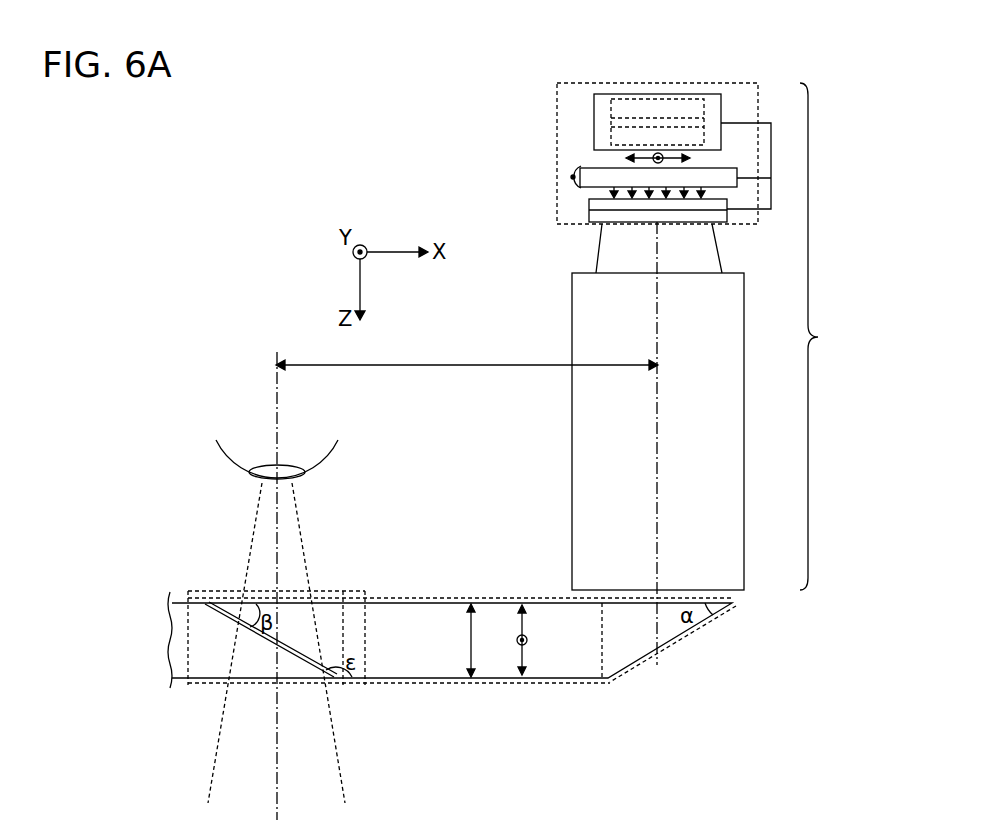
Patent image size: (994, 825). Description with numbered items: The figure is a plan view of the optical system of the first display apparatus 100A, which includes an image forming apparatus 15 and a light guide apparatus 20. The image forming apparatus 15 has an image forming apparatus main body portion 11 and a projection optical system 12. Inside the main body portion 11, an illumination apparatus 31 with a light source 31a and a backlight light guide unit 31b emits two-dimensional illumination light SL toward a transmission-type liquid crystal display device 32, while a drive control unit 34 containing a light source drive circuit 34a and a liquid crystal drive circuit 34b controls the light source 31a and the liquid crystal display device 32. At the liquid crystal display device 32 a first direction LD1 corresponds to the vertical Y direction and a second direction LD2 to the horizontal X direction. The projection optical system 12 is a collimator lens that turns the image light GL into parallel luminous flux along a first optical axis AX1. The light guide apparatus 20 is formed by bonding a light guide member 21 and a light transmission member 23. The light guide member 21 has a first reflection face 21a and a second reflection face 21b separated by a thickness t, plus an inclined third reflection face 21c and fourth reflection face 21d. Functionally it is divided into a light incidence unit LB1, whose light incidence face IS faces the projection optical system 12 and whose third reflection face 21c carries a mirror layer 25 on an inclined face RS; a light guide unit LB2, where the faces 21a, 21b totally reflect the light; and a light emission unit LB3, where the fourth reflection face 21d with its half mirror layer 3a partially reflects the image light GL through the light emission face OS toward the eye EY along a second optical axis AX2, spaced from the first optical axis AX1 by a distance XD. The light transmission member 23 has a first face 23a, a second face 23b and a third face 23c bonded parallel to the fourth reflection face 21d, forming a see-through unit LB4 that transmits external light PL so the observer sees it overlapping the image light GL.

The first display apparatus 100A is at (377, 153).
The image forming apparatus 15 is at (823, 336).
The image forming apparatus main body portion 11 is at (580, 83).
The drive control unit 34 is at (625, 94).
The light source drive circuit 34a is at (653, 112).
The liquid crystal drive circuit 34b is at (692, 97).
The first direction LD1 is at (660, 156).
The second direction LD2 is at (650, 154).
The illumination apparatus 31 is at (542, 160).
The light source 31a is at (563, 176).
The backlight light guide unit 31b is at (590, 167).
The liquid crystal display device 32 is at (589, 206).
The illumination light SL is at (704, 183).
The image light GL is at (716, 238).
The first optical axis AX1 is at (657, 262).
The projection optical system 12 is at (572, 418).
The distance XD is at (467, 353).
The light incidence face IS is at (628, 600).
The second optical axis AX2 is at (276, 400).
The eye EY is at (222, 450).
The external light PL is at (245, 526).
The light guide member 21 is at (572, 662).
The first reflection face 21a is at (432, 600).
The second reflection face 21b is at (535, 683).
The third reflection face 21c is at (630, 662).
The fourth reflection face 21d is at (245, 637).
The mirror layer 25 is at (668, 647).
The inclined face RS is at (693, 637).
The light incidence unit LB1 is at (693, 648).
The light guide unit LB2 is at (403, 685).
The light emission unit LB3 is at (343, 630).
The see-through unit LB4 is at (332, 664).
The thickness t is at (474, 640).
The light guide apparatus 20 is at (472, 703).
The light transmission member 23 is at (207, 658).
The first face 23a is at (201, 603).
The second face 23b is at (255, 685).
The third face 23c is at (300, 650).
The light emission face OS is at (245, 603).
The half mirror layer 3a is at (215, 621).